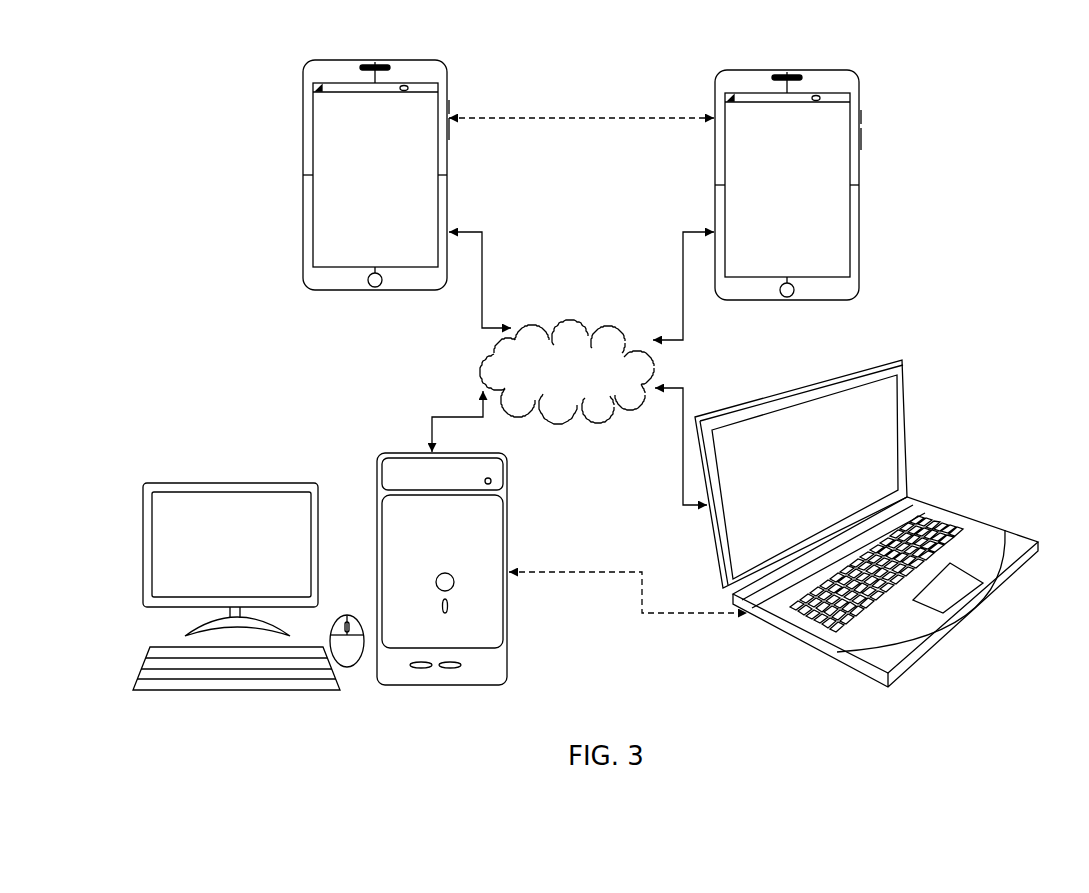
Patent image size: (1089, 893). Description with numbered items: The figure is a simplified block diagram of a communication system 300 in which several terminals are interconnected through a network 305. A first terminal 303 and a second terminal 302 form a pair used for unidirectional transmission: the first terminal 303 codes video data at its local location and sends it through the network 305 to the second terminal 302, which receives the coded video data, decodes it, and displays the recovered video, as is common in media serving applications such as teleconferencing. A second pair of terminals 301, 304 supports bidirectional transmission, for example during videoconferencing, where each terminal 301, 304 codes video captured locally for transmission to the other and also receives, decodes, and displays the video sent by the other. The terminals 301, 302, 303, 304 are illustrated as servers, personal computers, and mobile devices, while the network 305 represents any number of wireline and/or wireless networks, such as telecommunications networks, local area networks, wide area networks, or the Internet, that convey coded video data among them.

The communication system 300 is at (168, 48).
The terminal 301 is at (302, 160).
The second terminal 302 is at (508, 653).
The first terminal 303 is at (708, 526).
The terminal 304 is at (712, 162).
The network 305 is at (575, 318).